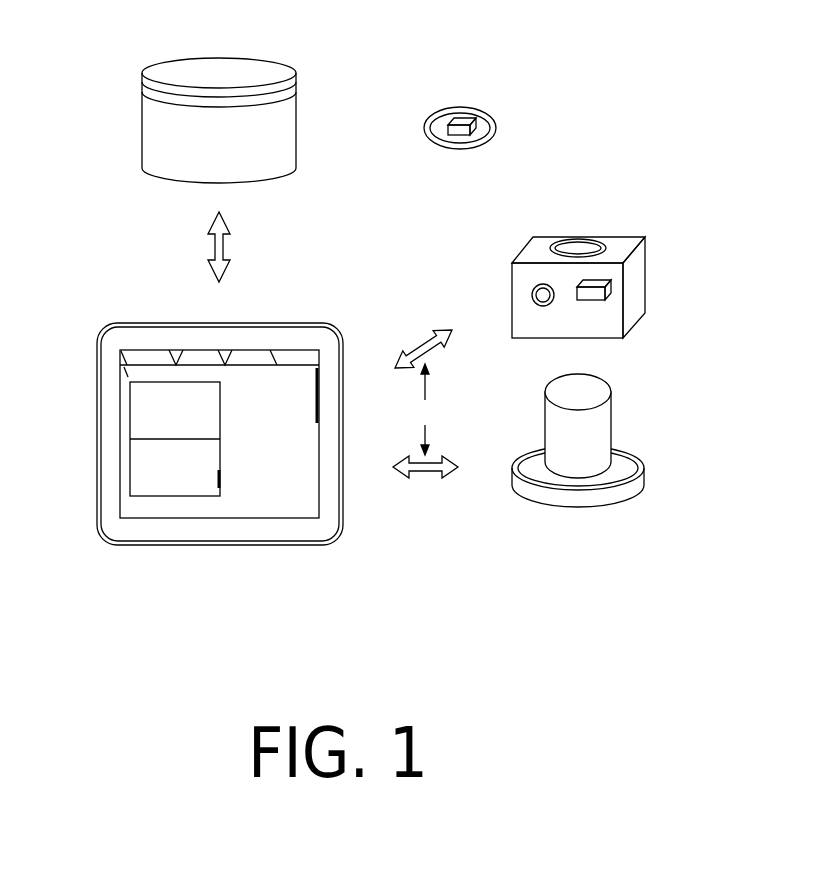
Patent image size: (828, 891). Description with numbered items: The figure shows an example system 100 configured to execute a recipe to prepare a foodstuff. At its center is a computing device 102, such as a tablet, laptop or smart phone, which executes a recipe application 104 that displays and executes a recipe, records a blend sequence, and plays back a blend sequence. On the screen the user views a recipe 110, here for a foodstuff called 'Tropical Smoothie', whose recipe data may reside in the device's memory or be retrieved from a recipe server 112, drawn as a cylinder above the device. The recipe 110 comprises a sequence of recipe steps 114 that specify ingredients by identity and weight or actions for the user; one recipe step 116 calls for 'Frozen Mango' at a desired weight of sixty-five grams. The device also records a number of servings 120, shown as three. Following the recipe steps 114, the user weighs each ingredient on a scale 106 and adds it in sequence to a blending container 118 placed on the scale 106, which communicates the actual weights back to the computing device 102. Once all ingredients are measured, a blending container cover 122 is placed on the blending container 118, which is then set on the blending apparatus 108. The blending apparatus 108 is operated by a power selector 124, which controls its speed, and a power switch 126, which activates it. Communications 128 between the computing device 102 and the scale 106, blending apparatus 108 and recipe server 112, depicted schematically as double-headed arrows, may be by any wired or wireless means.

The system 100 is at (602, 56).
The computing device 102 is at (325, 323).
The recipe application 104 is at (118, 348).
The scale 106 is at (640, 458).
The blending apparatus 108 is at (645, 237).
The recipe 110 is at (312, 385).
The recipe server 112 is at (296, 72).
The recipe steps 114 is at (131, 465).
The recipe step 116 is at (208, 402).
The blending container 118 is at (611, 392).
The number of servings 120 is at (287, 479).
The blending container cover 122 is at (478, 110).
The power selector 124 is at (532, 294).
The power switch 126 is at (611, 288).
The communications 128 is at (206, 250).